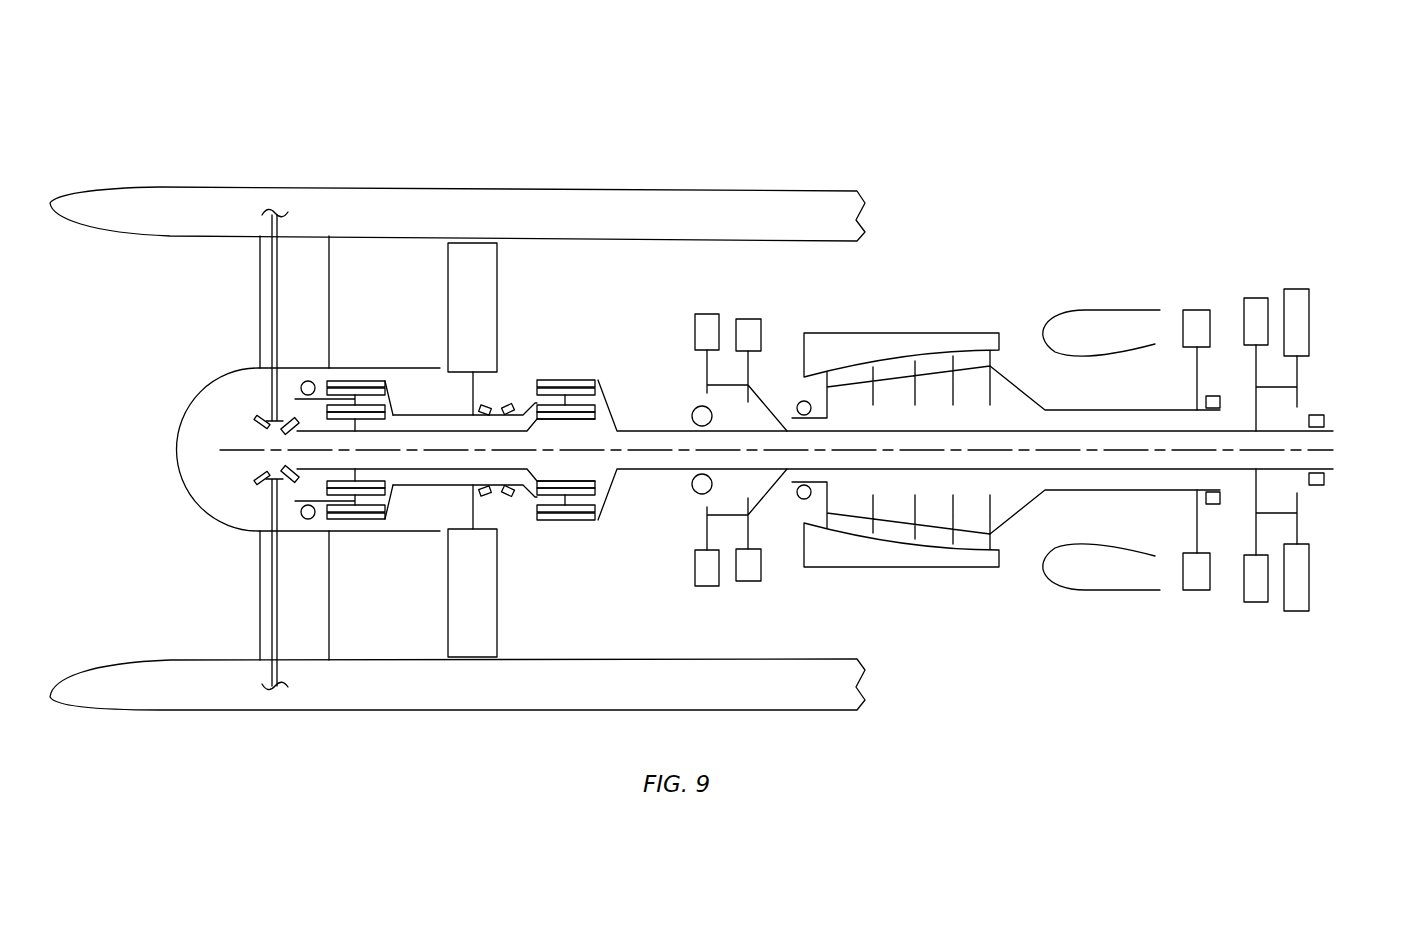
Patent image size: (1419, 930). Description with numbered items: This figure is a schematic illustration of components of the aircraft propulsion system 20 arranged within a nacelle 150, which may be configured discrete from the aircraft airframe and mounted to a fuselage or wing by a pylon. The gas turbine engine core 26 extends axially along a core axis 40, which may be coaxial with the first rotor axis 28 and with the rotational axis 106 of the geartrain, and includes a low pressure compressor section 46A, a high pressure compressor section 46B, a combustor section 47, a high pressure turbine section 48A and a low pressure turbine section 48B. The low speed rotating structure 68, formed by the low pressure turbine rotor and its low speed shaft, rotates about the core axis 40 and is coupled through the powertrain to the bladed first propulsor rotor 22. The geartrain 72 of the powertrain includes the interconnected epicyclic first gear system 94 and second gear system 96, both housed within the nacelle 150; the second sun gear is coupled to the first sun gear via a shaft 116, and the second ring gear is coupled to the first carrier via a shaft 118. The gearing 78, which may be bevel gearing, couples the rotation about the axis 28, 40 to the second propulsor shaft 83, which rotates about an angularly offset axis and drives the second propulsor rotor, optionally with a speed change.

The aircraft propulsion system 20 is at (457, 148).
The nacelle 150 is at (186, 178).
The first propulsor rotor 22 is at (510, 290).
The second propulsor shaft 83 is at (279, 267).
The gearing 78 is at (250, 403).
The low speed rotating structure 68 is at (819, 470).
The second gear system 96 is at (372, 360).
The shaft 118 is at (431, 413).
The shaft 116 is at (430, 487).
The first gear system 94 is at (556, 370).
The geartrain 72 is at (531, 562).
The low pressure compressor section 46A is at (742, 306).
The high pressure compressor section 46B is at (927, 320).
The gas turbine engine core 26 is at (1102, 284).
The combustor section 47 is at (1069, 308).
The high pressure turbine section 48A is at (1200, 294).
The low pressure turbine section 48B is at (1279, 282).
The first rotor axis 28 is at (819, 500).
The core axis 40 is at (819, 500).
The rotational axis 106 is at (1317, 450).